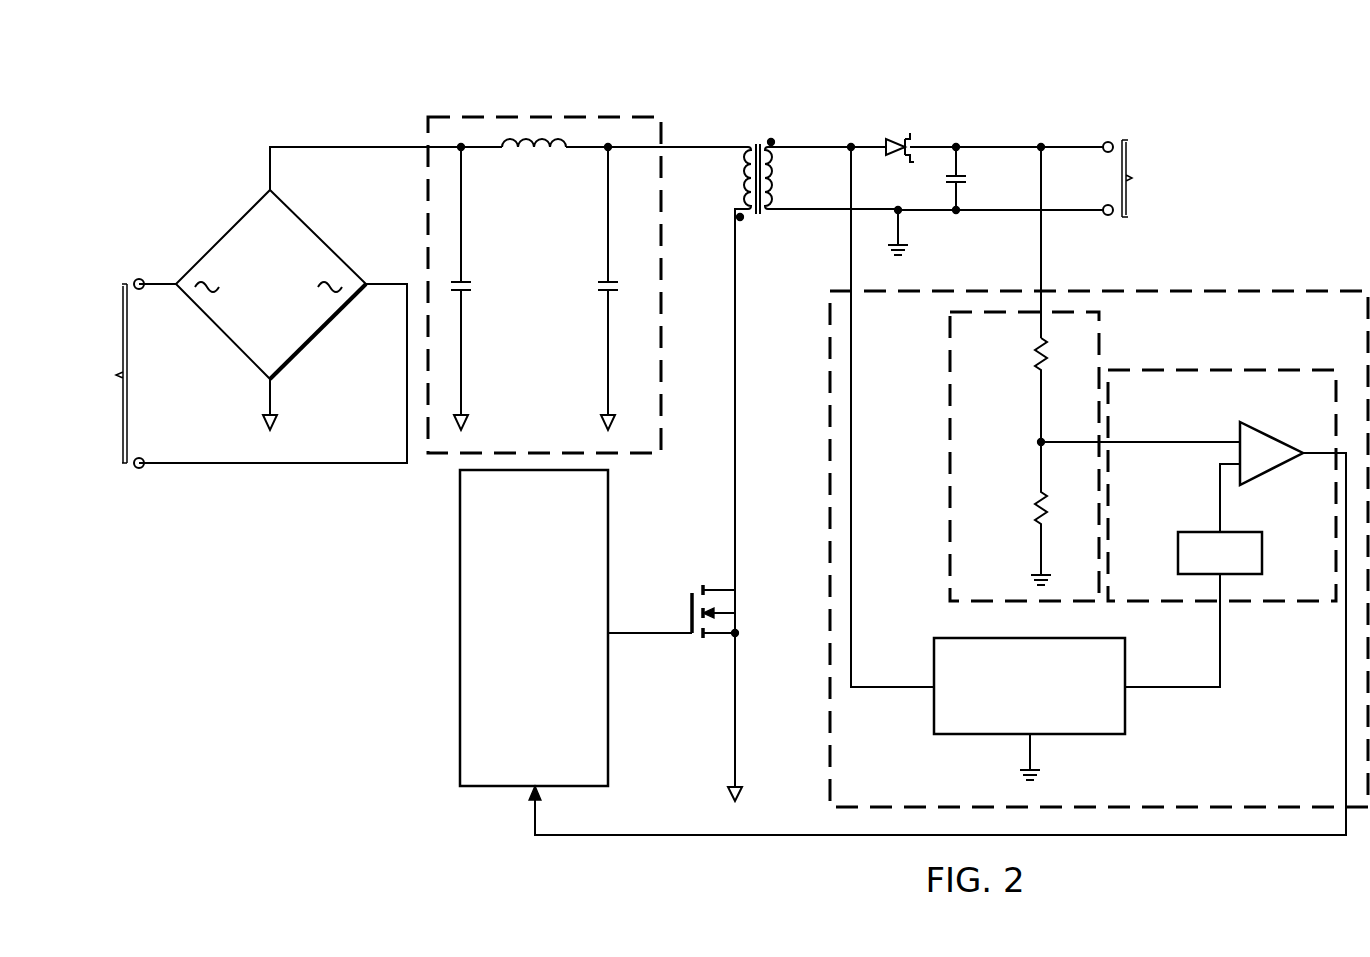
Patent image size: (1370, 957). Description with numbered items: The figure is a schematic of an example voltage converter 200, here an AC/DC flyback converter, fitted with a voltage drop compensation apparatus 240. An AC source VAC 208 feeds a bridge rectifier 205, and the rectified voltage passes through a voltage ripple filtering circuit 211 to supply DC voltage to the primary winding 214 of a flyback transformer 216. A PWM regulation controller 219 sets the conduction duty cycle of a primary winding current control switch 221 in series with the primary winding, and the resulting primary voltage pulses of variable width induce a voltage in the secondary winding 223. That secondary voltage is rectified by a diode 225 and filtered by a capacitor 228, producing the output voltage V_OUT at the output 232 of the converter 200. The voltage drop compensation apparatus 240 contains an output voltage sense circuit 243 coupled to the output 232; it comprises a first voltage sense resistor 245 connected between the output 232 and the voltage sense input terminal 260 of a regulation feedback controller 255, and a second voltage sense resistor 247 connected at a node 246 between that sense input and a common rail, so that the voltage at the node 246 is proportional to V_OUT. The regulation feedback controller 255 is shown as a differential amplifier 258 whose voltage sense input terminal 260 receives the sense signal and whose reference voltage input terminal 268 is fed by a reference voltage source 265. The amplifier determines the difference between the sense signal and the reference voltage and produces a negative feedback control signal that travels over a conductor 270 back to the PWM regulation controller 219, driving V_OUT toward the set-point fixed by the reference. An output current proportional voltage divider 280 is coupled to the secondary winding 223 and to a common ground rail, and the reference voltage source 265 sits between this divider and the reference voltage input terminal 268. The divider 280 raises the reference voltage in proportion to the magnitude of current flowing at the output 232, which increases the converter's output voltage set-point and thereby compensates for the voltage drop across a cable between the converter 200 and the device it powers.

The voltage converter 200 is at (1223, 89).
The bridge rectifier 205 is at (230, 244).
The AC input voltage VAC 208 is at (105, 373).
The voltage ripple filtering circuit 211 is at (505, 112).
The primary winding 214 is at (730, 179).
The flyback transformer 216 is at (753, 144).
The PWM regulation controller 219 is at (460, 704).
The primary winding current control switch 221 is at (690, 614).
The secondary winding 223 is at (772, 180).
The diode 225 is at (900, 138).
The capacitor 228 is at (944, 179).
The output 232 is at (1158, 177).
The voltage drop compensation apparatus 240 is at (1257, 287).
The output voltage sense circuit 243 is at (946, 494).
The first voltage sense resistor 245 is at (1034, 354).
The node 246 is at (1034, 444).
The second voltage sense resistor 247 is at (1034, 514).
The regulation feedback controller 255 is at (1265, 608).
The differential amplifier 258 is at (1272, 471).
The voltage sense input terminal 260 is at (1236, 437).
The reference voltage source 265 is at (1262, 553).
The reference voltage input terminal 268 is at (1240, 463).
The conductor 270 is at (1346, 729).
The output current proportional voltage divider 280 is at (1126, 708).